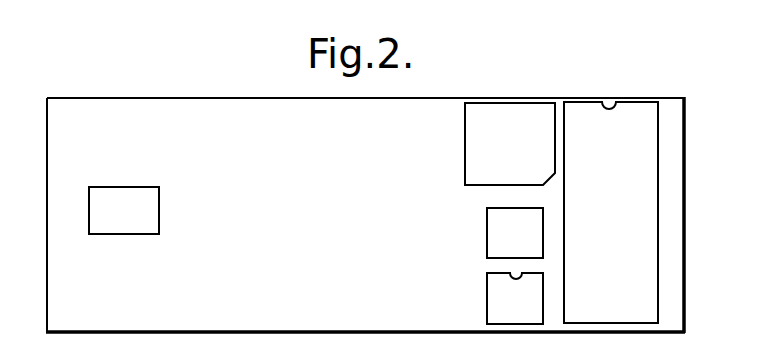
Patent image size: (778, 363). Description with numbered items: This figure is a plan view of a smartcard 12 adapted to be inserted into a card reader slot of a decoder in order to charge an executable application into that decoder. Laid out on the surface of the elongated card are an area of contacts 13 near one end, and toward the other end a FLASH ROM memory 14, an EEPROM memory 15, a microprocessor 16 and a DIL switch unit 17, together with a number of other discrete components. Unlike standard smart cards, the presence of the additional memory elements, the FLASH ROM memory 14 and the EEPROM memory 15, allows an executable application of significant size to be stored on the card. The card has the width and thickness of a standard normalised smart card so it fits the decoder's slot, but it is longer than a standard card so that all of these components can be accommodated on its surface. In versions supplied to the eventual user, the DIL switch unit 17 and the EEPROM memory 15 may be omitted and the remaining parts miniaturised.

The smartcard 12 is at (210, 97).
The area of contacts 13 is at (122, 187).
The FLASH ROM memory 14 is at (465, 146).
The EEPROM memory 15 is at (487, 245).
The microprocessor 16 is at (658, 155).
The DIL switch unit 17 is at (487, 308).